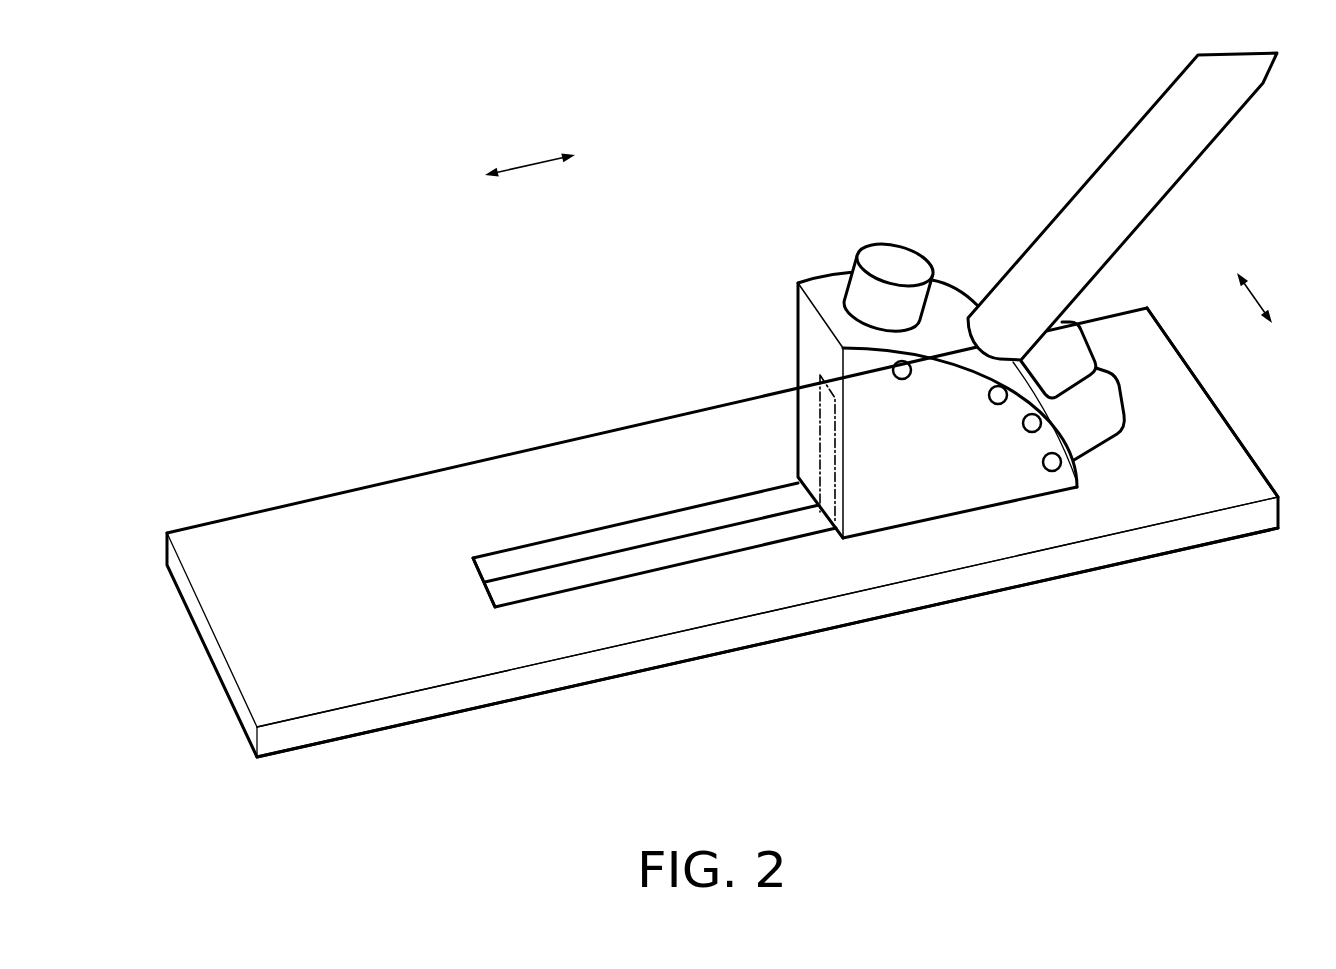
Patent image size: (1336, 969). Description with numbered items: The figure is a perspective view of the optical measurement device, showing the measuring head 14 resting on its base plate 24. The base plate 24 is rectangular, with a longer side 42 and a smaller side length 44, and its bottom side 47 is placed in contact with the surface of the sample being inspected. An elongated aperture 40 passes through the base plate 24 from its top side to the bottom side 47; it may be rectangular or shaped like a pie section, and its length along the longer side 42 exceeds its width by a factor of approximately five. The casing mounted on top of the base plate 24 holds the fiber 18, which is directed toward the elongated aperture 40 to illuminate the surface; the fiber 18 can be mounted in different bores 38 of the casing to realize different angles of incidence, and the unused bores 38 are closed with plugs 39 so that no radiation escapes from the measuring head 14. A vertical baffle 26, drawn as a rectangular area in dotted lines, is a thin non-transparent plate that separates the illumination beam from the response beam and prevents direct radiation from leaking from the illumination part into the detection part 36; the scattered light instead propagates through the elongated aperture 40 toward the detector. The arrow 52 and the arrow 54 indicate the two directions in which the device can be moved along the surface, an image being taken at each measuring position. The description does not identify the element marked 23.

The measuring head 14 is at (375, 301).
The fiber 18 is at (1117, 147).
The rear edge of base 23 is at (283, 505).
The base plate 24 is at (238, 655).
The vertical baffle 26 is at (828, 477).
The detection part 36 is at (673, 543).
The bores 38 is at (962, 545).
The plugs 39 is at (898, 262).
The elongated aperture 40 is at (507, 592).
The longer side 42 is at (1254, 390).
The smaller side length 44 is at (621, 715).
The bottom side 47 is at (1078, 610).
The arrow 52 is at (1264, 297).
The arrow 54 is at (530, 148).